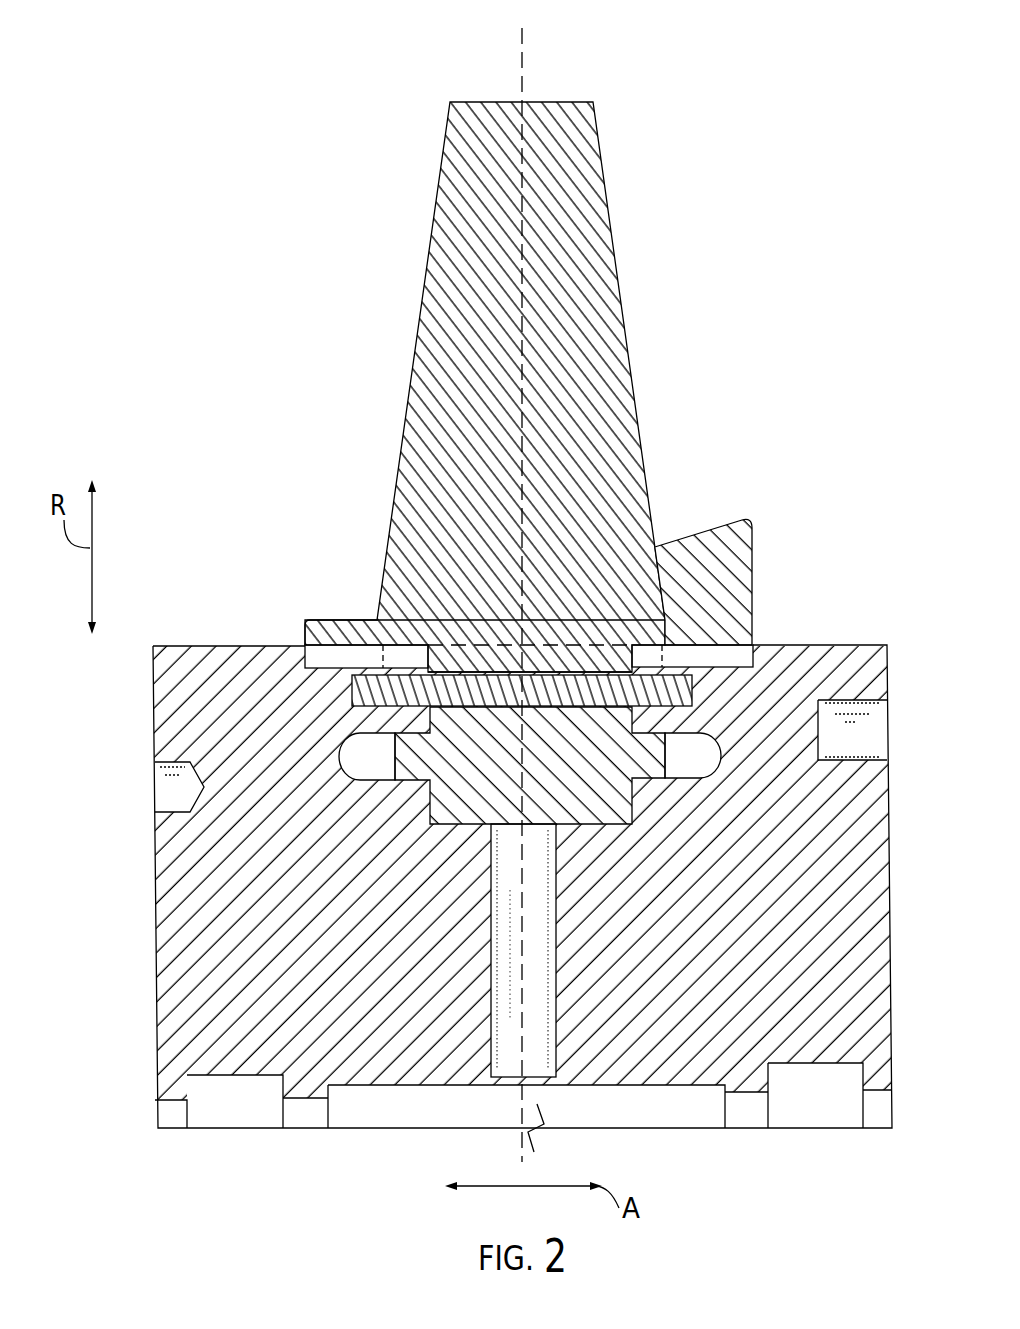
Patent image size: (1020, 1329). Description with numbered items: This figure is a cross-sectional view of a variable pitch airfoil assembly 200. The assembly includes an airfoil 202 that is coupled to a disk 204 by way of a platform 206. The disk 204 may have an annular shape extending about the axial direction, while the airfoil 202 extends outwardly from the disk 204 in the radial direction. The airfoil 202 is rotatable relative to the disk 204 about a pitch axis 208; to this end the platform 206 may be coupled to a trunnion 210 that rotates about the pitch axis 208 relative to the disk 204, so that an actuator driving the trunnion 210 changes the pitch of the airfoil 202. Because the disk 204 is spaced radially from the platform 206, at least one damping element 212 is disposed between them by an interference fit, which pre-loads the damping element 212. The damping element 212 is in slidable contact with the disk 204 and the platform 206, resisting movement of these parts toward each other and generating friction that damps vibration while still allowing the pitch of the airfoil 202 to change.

The variable pitch airfoil assembly 200 is at (787, 197).
The airfoil 202 is at (590, 157).
The disk 204 is at (354, 692).
The platform 206 is at (323, 633).
The pitch axis 208 is at (523, 62).
The trunnion 210 is at (432, 662).
The damping element 212 is at (601, 640).